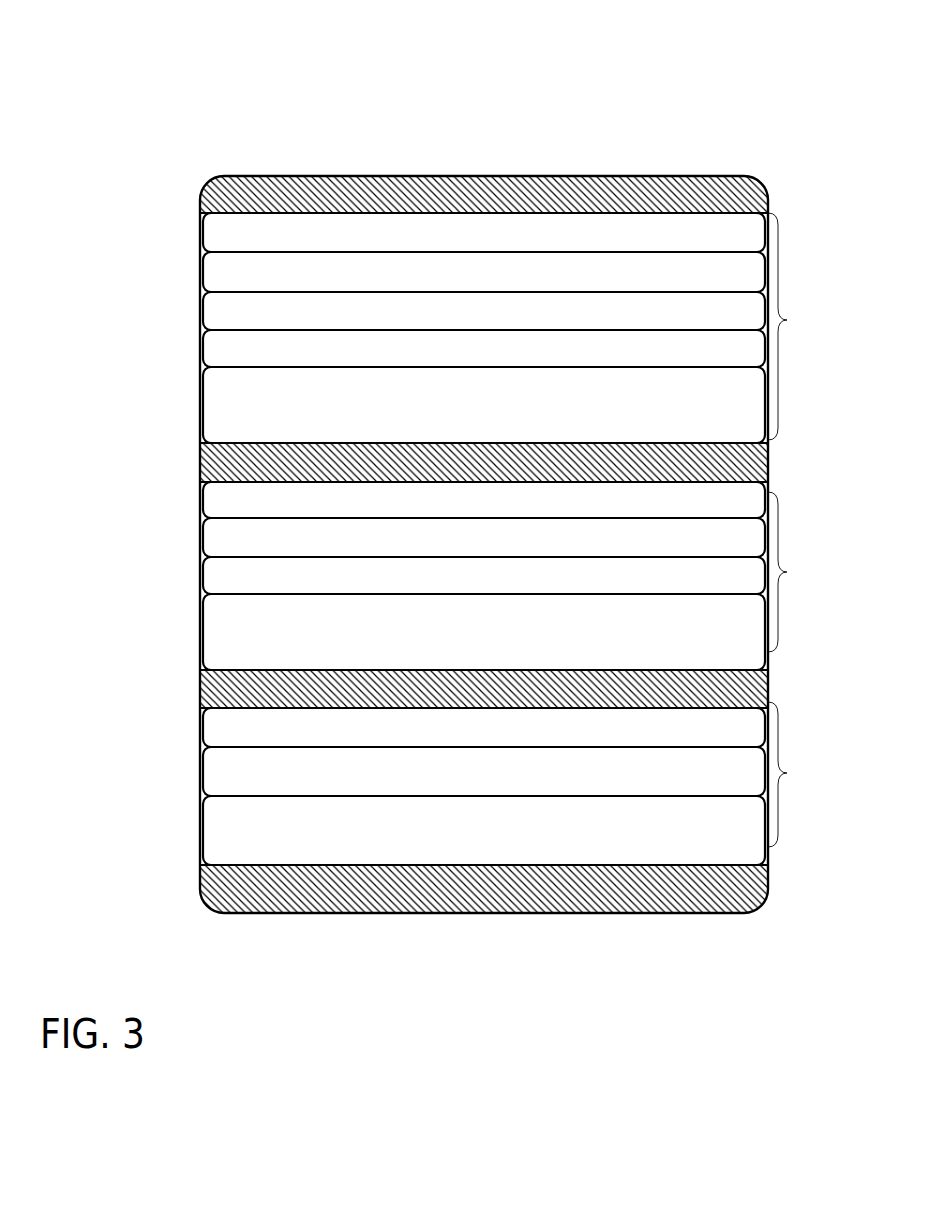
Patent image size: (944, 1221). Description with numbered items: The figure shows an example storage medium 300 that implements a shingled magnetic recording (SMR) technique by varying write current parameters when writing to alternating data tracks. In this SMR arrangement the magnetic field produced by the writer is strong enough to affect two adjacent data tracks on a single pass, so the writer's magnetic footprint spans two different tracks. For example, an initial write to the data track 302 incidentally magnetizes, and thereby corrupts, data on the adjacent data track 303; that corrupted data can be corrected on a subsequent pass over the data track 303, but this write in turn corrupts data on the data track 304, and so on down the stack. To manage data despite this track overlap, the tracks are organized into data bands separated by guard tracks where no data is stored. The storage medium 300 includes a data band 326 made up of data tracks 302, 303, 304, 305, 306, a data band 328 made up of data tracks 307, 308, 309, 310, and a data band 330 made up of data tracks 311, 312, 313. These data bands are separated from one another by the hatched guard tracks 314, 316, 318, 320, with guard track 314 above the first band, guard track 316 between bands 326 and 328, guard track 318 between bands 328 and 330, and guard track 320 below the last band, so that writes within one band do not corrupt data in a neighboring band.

The storage medium 300 is at (150, 47).
The data track 302 is at (505, 242).
The data track 303 is at (505, 283).
The data track 304 is at (505, 319).
The data track 305 is at (505, 356).
The data track 306 is at (505, 407).
The data track 307 is at (509, 510).
The data track 308 is at (509, 547).
The data track 309 is at (509, 584).
The data track 310 is at (509, 636).
The data track 311 is at (509, 740).
The data track 312 is at (509, 780).
The data track 313 is at (509, 825).
The guard track 314 is at (222, 202).
The guard track 316 is at (210, 470).
The guard track 318 is at (210, 693).
The guard track 320 is at (218, 892).
The data band 326 is at (787, 320).
The data band 328 is at (787, 572).
The data band 330 is at (787, 773).